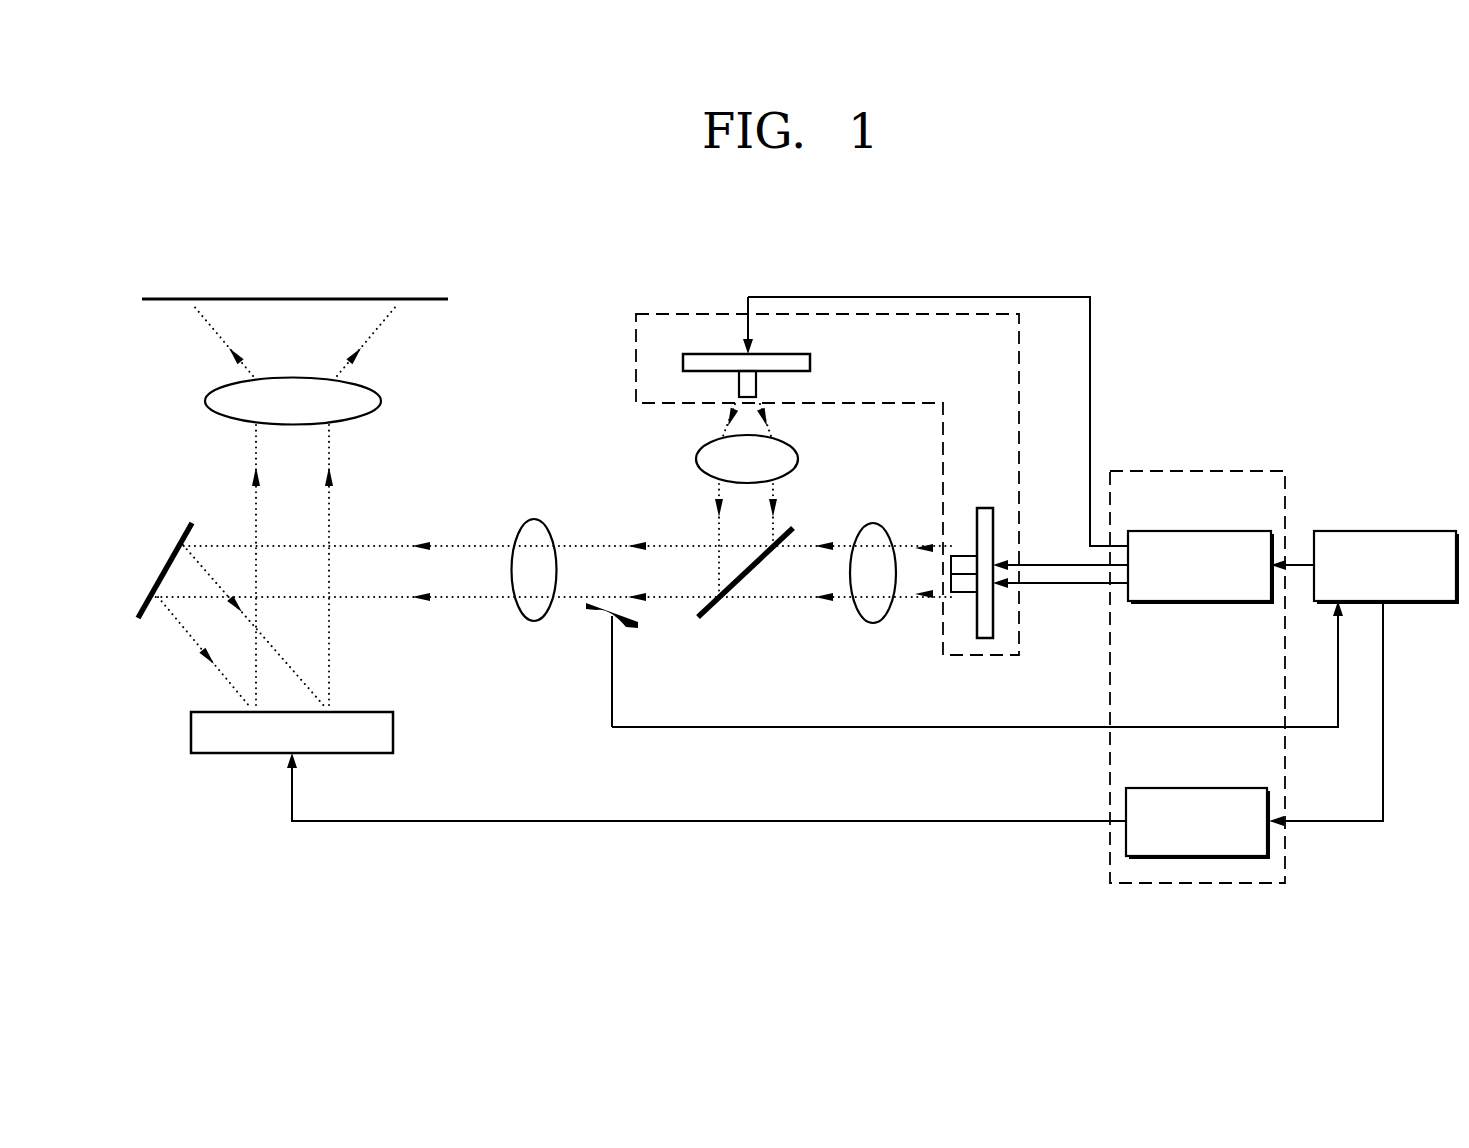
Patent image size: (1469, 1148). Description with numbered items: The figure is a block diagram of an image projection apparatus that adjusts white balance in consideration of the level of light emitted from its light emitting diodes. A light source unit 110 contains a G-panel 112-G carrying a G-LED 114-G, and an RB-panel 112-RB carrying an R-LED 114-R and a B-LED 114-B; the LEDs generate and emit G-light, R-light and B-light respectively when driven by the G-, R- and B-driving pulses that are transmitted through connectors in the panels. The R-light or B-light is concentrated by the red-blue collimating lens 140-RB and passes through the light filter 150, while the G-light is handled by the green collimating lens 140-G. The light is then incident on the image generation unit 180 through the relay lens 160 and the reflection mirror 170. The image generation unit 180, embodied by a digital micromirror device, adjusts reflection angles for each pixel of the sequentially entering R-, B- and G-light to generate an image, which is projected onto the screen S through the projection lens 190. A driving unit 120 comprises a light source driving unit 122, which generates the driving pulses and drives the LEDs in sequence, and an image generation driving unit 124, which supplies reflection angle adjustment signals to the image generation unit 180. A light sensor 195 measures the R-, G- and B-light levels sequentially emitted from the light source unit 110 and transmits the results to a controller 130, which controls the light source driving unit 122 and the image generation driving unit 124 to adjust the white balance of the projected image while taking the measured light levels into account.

The screen S is at (291, 298).
The light source unit 110 is at (636, 358).
The G-panel 112-G is at (808, 352).
The G-LED 114-G is at (739, 383).
The green collimating lens 140-G is at (696, 460).
The RB-panel 112-RB is at (986, 507).
The R-LED 114-R is at (951, 558).
The B-LED 114-B is at (963, 593).
The red-blue collimating lens 140-RB is at (873, 624).
The light filter 150 is at (722, 606).
The relay lens 160 is at (534, 622).
The light sensor 195 is at (624, 624).
The reflection mirror 170 is at (172, 559).
The image generation unit 180 is at (217, 754).
The projection lens 190 is at (382, 401).
The driving unit 120 is at (1106, 670).
The light source driving unit 122 is at (1197, 530).
The image generation driving unit 124 is at (1126, 800).
The controller 130 is at (1387, 530).